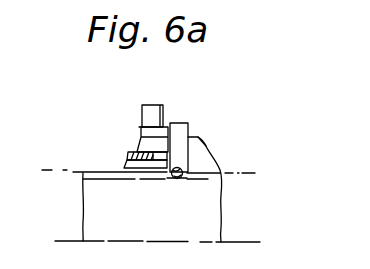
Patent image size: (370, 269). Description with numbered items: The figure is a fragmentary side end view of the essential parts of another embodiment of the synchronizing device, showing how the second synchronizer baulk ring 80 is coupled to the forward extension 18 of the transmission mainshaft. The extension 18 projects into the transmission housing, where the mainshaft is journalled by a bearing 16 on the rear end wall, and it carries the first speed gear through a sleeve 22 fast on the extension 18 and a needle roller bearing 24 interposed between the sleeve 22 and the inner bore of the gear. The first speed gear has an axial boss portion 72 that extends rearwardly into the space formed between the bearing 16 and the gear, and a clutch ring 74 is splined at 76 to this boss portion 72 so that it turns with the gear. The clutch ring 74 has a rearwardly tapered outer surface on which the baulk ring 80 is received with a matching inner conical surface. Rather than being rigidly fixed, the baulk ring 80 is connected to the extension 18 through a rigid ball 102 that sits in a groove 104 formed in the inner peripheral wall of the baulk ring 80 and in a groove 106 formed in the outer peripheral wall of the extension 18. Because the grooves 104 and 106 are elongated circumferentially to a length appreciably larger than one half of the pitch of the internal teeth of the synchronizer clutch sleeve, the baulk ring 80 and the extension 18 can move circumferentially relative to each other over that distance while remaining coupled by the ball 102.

The bearing 16 is at (200, 174).
The forward extension 18 is at (83, 216).
The sleeve 22 is at (125, 168).
The needle roller bearing 24 is at (128, 159).
The axial boss portion 72 is at (138, 143).
The clutch ring 74 is at (142, 120).
The spline 76 is at (139, 127).
The second baulk ring 80 is at (207, 147).
The rigid ball 102 is at (172, 177).
The groove 104 is at (209, 147).
The groove 106 is at (180, 179).